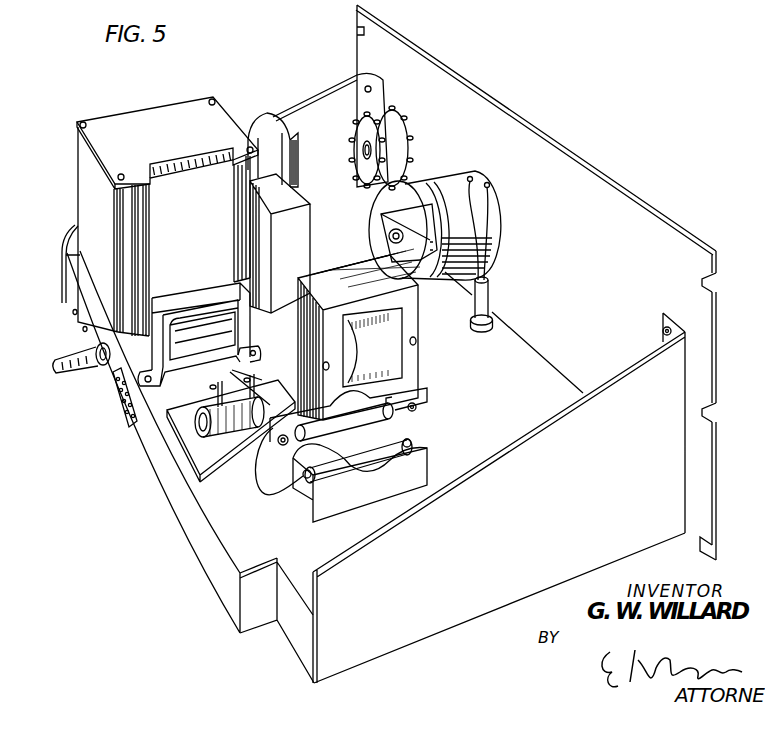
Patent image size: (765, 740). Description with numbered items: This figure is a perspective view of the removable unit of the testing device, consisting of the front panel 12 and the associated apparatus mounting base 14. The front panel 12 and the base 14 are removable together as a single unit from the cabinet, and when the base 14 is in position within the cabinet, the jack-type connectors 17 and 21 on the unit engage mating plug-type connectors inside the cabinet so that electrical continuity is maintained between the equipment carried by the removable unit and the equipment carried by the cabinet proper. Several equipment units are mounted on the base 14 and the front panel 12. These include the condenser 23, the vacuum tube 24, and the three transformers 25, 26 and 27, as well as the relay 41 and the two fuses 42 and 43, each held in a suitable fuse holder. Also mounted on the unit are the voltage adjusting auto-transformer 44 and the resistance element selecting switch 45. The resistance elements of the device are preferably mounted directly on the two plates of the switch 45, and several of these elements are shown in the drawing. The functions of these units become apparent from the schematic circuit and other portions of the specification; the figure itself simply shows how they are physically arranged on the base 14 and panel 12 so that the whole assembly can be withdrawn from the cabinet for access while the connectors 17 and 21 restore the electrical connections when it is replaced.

The front panel 12 is at (630, 206).
The apparatus mounting base 14 is at (262, 617).
The jack-type connector 17 is at (112, 399).
The jack-type connector 21 is at (82, 329).
The condenser 23 is at (302, 235).
The vacuum tube 24 is at (262, 120).
The transformer 25 is at (145, 113).
The transformer 26 is at (192, 345).
The transformer 27 is at (401, 355).
The relay 41 is at (237, 435).
The fuse 42 is at (393, 404).
The fuse 43 is at (344, 462).
The voltage adjusting auto-transformer 44 is at (463, 175).
The resistance element selecting switch 45 is at (388, 144).